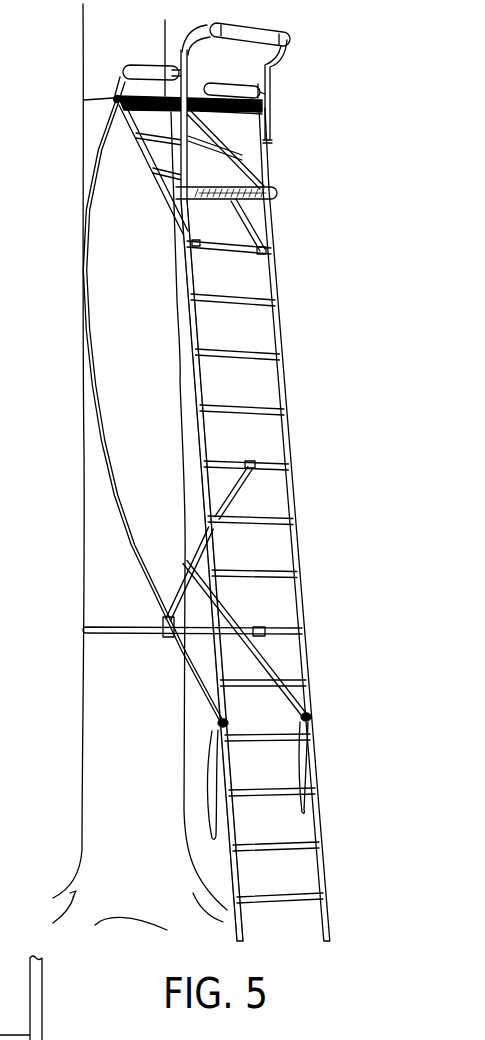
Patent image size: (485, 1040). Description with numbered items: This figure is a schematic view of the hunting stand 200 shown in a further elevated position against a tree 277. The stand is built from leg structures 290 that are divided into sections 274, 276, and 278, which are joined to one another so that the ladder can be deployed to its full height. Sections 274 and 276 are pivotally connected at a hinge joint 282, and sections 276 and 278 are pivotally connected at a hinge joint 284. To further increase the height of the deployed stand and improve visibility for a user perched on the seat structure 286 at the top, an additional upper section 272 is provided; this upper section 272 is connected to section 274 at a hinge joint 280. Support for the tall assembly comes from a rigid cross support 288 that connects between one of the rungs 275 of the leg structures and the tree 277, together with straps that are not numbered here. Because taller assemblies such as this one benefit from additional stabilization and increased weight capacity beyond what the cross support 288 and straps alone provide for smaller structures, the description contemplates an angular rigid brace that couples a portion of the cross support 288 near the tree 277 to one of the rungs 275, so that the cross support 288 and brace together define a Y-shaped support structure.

The hunting stand 200 is at (282, 495).
The upper section 272 is at (273, 238).
The section 274 is at (288, 402).
The rung 275 is at (280, 850).
The section 276 is at (307, 637).
The tree 277 is at (107, 765).
The section 278 is at (323, 815).
The hinge joint 280 is at (277, 301).
The hinge joint 282 is at (292, 507).
The hinge joint 284 is at (312, 715).
The seat structure 286 is at (208, 84).
The cross support 288 is at (145, 625).
The leg structures 290 is at (198, 575).